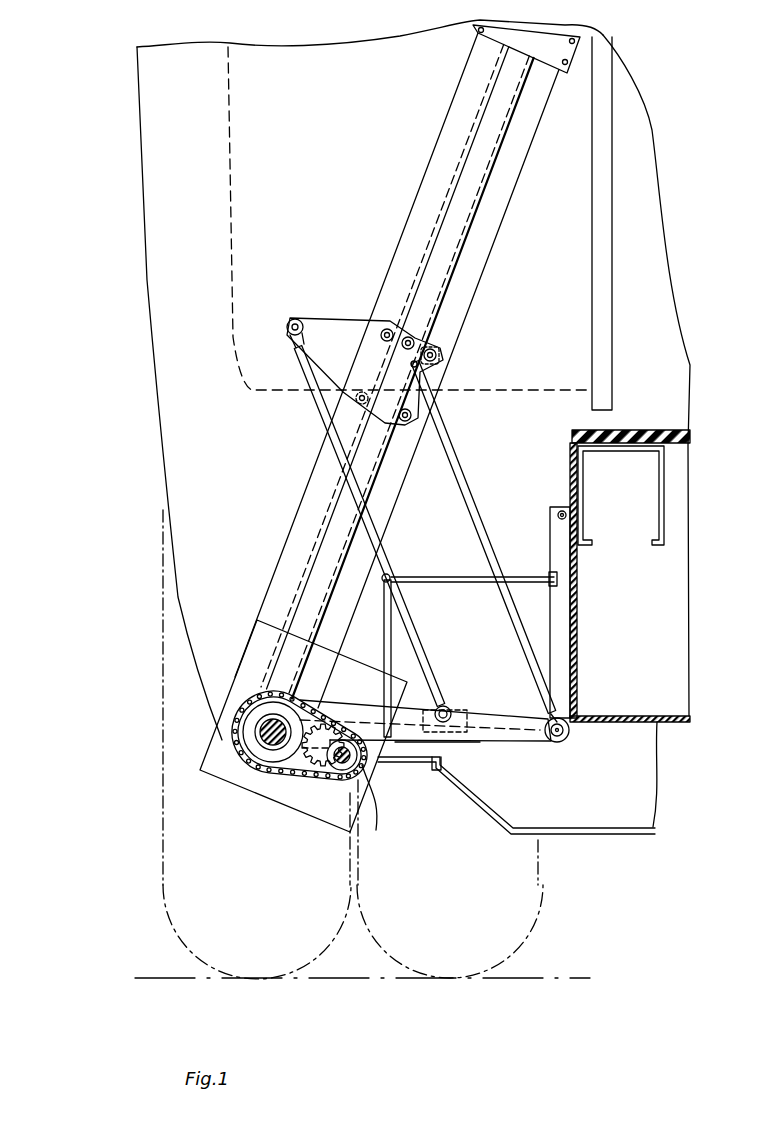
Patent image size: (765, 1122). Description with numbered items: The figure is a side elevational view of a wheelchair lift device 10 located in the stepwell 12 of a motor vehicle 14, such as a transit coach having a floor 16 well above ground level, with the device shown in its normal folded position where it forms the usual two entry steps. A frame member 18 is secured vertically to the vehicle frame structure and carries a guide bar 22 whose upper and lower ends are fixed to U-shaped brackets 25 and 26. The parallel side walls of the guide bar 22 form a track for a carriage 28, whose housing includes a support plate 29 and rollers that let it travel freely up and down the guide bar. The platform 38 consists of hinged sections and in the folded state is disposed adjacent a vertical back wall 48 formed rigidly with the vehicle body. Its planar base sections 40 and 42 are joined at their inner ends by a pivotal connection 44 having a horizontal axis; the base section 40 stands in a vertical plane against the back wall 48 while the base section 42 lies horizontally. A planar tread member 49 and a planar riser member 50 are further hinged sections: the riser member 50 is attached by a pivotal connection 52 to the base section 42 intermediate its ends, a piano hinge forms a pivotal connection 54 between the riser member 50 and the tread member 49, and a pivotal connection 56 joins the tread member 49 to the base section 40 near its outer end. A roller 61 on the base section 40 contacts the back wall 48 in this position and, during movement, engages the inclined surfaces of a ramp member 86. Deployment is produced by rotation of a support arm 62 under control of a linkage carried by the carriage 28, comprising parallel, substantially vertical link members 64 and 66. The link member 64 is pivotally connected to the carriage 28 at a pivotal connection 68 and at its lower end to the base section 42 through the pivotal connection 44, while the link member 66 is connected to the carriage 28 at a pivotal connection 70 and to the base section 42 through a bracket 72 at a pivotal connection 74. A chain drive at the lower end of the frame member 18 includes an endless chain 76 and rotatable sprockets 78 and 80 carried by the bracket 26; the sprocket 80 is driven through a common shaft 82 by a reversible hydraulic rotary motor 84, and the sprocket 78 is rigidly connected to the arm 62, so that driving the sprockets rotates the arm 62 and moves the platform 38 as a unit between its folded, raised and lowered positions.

The wheelchair lift device 10 is at (332, 218).
The stepwell 12 is at (185, 540).
The motor vehicle 14 is at (140, 215).
The floor 16 is at (633, 430).
The frame member 18 is at (452, 108).
The guide bar 22 is at (452, 252).
The U-shaped bracket 25 is at (560, 30).
The U-shaped bracket 26 is at (245, 688).
The carriage 28 is at (352, 316).
The support plate 29 is at (318, 330).
The platform 38 is at (541, 540).
The base section 40 is at (560, 636).
The base section 42 is at (487, 740).
The pivotal connection 44 is at (567, 736).
The back wall 48 is at (577, 684).
The tread member 49 is at (432, 576).
The riser member 50 is at (384, 622).
The pivotal connection 52 is at (410, 745).
The pivotal connection 54 is at (380, 579).
The pivotal connection 56 is at (560, 580).
The roller 61 is at (568, 515).
The support arm 62 is at (377, 702).
The support link member 64 is at (455, 440).
The support link member 66 is at (330, 410).
The pivotal connection 68 is at (437, 352).
The pivotal connection 70 is at (282, 330).
The bracket 72 is at (460, 714).
The pivotal connection 74 is at (447, 704).
The endless chain 76 is at (296, 770).
The sprocket 78 is at (265, 750).
The sprocket 80 is at (341, 770).
The common shaft 82 is at (330, 770).
The reversible hydraulic rotary motor 84 is at (385, 770).
The ramp member 86 is at (570, 430).